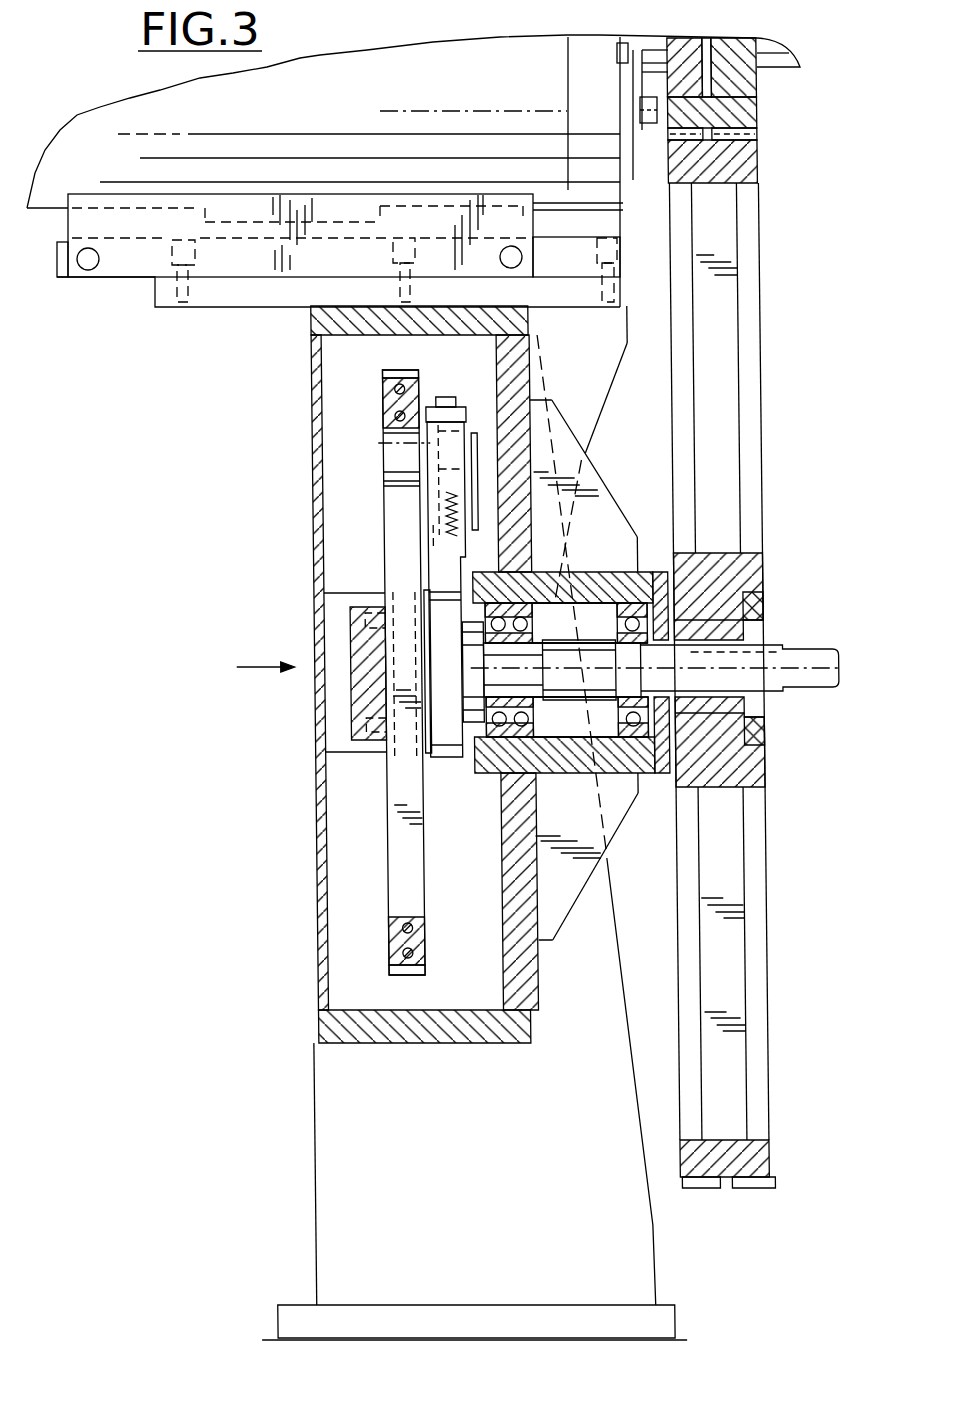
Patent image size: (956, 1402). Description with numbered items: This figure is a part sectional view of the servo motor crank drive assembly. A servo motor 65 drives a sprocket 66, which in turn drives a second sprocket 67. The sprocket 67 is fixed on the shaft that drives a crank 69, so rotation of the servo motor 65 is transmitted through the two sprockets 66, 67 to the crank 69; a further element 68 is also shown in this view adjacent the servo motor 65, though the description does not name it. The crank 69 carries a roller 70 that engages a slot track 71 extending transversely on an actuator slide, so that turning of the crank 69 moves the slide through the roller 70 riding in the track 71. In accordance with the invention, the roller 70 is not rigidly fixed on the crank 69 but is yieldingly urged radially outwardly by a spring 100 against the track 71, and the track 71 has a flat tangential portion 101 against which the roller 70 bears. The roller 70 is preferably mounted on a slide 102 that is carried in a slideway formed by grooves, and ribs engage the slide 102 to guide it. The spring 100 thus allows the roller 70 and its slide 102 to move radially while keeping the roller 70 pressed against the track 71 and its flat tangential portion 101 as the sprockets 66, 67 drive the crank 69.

The servo motor 65 is at (366, 113).
The sprocket 66 is at (753, 116).
The sprocket 67 is at (754, 222).
The clamping block 68 is at (485, 222).
The crank 69 is at (446, 760).
The roller 70 is at (393, 455).
The slot track 71 is at (397, 868).
The spring 100 is at (431, 510).
The flat tangential portion 101 is at (386, 433).
The slide 102 is at (470, 420).